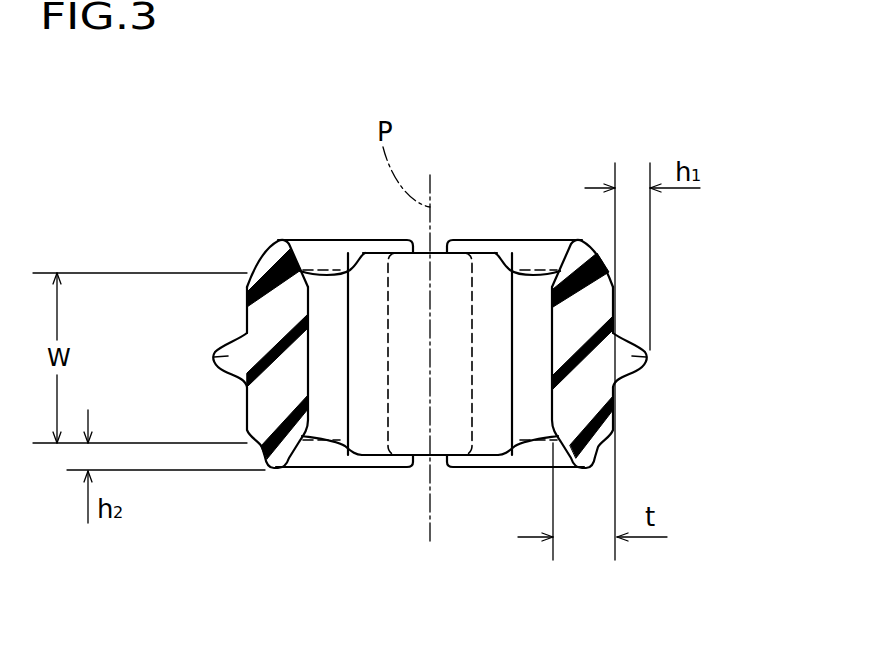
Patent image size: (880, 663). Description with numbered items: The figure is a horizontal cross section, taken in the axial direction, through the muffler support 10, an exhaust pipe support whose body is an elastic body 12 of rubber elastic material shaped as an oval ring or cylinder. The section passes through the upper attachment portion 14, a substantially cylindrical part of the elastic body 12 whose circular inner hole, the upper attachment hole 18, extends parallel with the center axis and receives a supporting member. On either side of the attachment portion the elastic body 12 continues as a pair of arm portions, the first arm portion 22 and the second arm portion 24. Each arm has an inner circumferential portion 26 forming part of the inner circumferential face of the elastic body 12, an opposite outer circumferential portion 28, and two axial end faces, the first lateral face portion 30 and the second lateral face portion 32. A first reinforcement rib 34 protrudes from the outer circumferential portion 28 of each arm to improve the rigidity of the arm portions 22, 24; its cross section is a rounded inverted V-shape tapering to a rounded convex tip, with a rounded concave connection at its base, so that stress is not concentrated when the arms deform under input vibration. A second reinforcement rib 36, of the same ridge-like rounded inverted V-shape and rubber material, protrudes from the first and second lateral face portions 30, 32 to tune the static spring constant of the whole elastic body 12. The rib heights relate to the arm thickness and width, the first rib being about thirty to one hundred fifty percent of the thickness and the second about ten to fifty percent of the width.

The muffler support 10 is at (333, 206).
The elastic body 12 is at (440, 243).
The upper attachment portion 14 is at (463, 463).
The upper attachment hole 18 is at (390, 458).
The first arm portion 22 is at (247, 313).
The second arm portion 24 is at (615, 398).
The inner circumferential portion 26 is at (308, 344).
The outer circumferential portion 28 is at (254, 404).
The first lateral face portion 30 is at (255, 272).
The second lateral face portion 32 is at (309, 468).
The first reinforcement rib 34 is at (214, 357).
The second reinforcement rib 36 is at (277, 254).